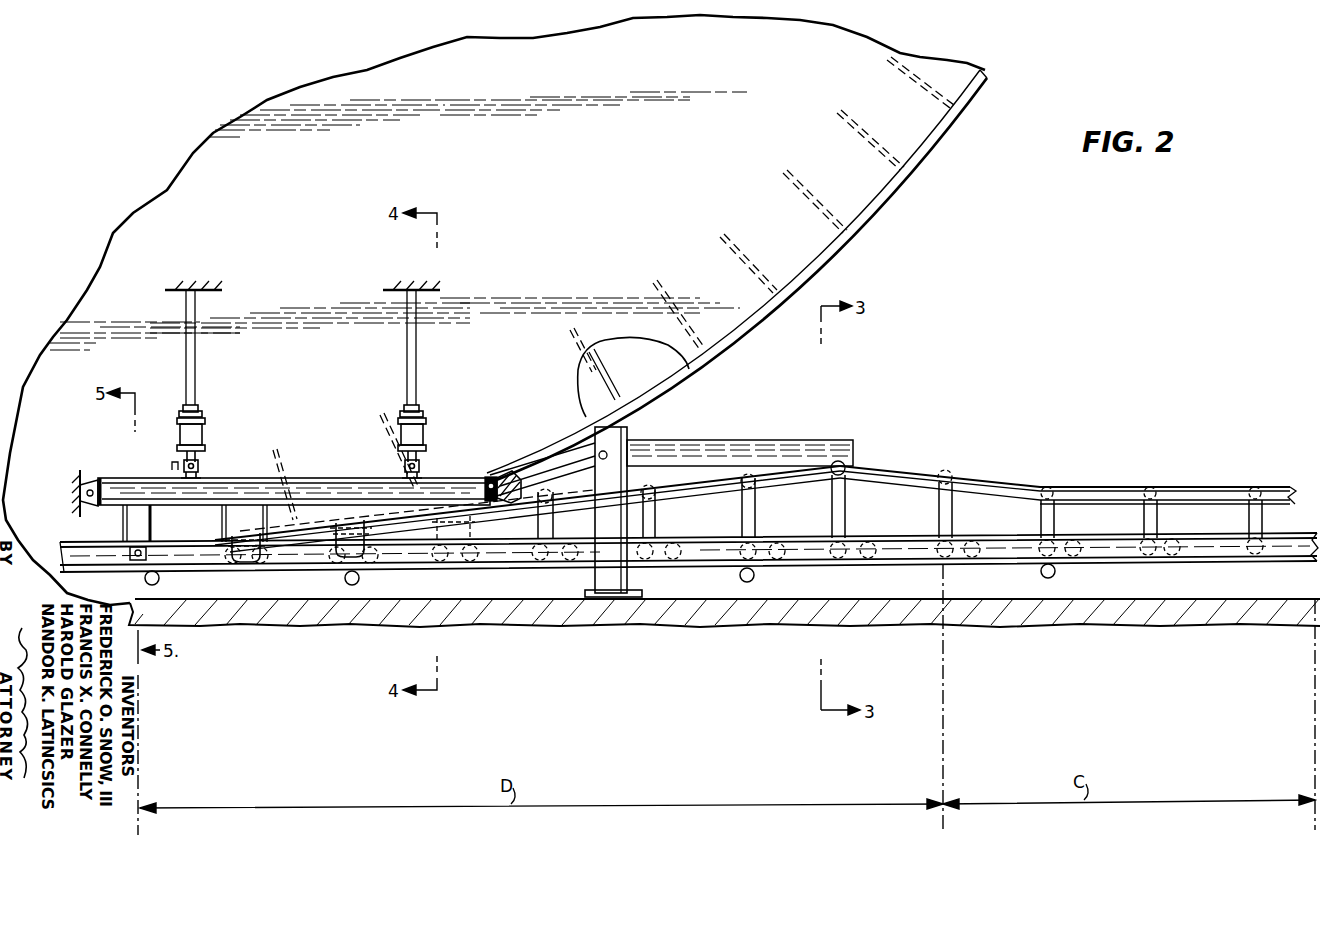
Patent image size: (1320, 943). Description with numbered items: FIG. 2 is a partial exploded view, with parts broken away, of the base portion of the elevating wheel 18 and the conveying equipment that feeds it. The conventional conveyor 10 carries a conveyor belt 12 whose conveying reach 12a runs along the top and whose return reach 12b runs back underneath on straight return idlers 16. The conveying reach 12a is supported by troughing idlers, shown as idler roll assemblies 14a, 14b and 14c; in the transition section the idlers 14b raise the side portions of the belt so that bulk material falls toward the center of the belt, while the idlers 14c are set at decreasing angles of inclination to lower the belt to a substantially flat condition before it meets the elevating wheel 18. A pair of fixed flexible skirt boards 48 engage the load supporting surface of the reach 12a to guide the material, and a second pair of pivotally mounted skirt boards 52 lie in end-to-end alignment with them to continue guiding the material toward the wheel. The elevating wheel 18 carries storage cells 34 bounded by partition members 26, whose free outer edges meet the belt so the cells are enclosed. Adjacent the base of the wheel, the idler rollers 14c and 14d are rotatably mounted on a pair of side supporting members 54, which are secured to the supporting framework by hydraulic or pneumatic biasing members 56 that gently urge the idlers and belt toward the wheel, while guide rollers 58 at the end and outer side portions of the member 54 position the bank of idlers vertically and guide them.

The conveyor 10 is at (1237, 487).
The conveyor belt 12 is at (1132, 518).
The conveying reach 12a is at (1098, 513).
The return reach 12b is at (956, 577).
The troughing idler roll assembly 14a is at (1038, 518).
The troughing idlers 14b is at (847, 518).
The troughing idlers 14c is at (650, 518).
The idler rollers 14d is at (172, 590).
The straight return idlers 16 is at (159, 580).
The elevating wheel 18 is at (917, 173).
The partition members 26 is at (743, 248).
The storage cells 34 is at (823, 167).
The fixed flexible skirt boards 48 is at (683, 470).
The pivotally mounted skirt boards 52 is at (558, 490).
The side supporting members 54 is at (325, 478).
The biasing members 56 is at (200, 428).
The guide rollers 58 is at (91, 490).